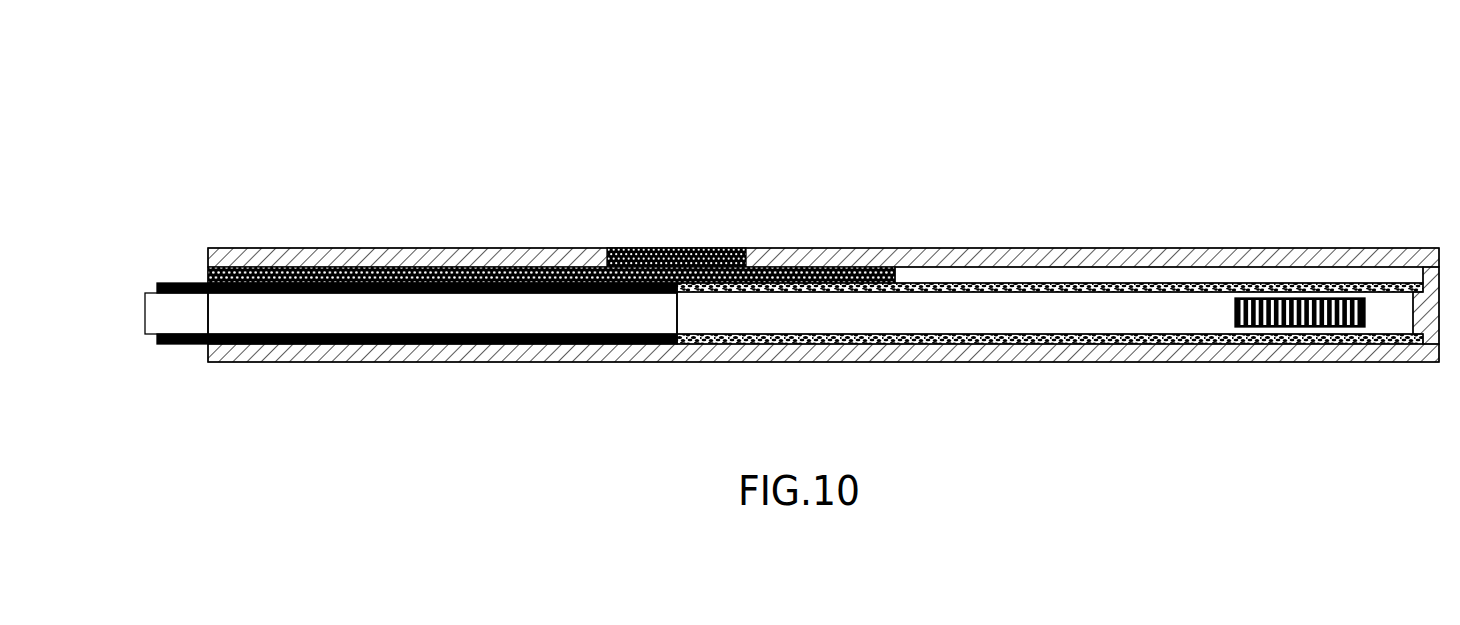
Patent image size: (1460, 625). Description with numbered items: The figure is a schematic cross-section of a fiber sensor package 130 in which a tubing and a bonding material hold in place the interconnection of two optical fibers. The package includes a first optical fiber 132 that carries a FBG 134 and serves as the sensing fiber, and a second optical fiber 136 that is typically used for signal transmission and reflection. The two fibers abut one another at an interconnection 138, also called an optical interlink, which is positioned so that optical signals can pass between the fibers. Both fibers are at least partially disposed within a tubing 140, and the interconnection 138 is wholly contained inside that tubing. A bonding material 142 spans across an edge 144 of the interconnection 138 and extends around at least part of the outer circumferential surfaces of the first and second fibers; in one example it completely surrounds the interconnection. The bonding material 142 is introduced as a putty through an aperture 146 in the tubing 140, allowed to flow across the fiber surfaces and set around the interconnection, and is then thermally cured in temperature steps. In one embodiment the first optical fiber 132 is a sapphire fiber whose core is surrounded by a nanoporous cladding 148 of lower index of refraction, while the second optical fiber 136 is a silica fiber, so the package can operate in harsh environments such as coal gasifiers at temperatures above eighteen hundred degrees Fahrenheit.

The fiber sensor package 130 is at (212, 94).
The first optical fiber 132 is at (950, 313).
The FBG 134 is at (1293, 299).
The second optical fiber 136 is at (403, 322).
The interconnection 138 is at (675, 321).
The tubing 140 is at (512, 352).
The bonding material 142 is at (513, 268).
The edge of the interconnection 144 is at (680, 291).
The aperture 146 is at (717, 249).
The nanoporous cladding 148 is at (1297, 338).